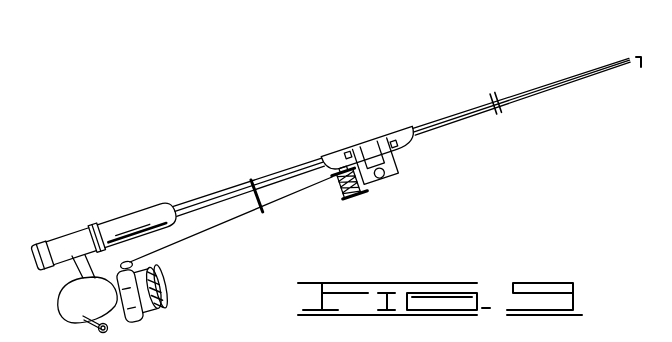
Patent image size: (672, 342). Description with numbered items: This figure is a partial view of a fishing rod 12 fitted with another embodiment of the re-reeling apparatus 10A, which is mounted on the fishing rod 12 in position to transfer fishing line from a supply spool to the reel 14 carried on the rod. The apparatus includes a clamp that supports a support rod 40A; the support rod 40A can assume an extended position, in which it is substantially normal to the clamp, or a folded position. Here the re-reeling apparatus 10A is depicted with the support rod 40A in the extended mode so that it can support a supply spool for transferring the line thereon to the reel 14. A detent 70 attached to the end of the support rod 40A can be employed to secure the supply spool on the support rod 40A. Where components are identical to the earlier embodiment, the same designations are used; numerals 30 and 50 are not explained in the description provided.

The fishing rod 12 is at (231, 188).
The reel 14 is at (153, 308).
The re-reeling apparatus 10A is at (390, 178).
The line holder clamp 30 is at (336, 208).
The support rod 40A is at (355, 204).
The fishing line 50 is at (212, 227).
The detent 70 is at (359, 204).